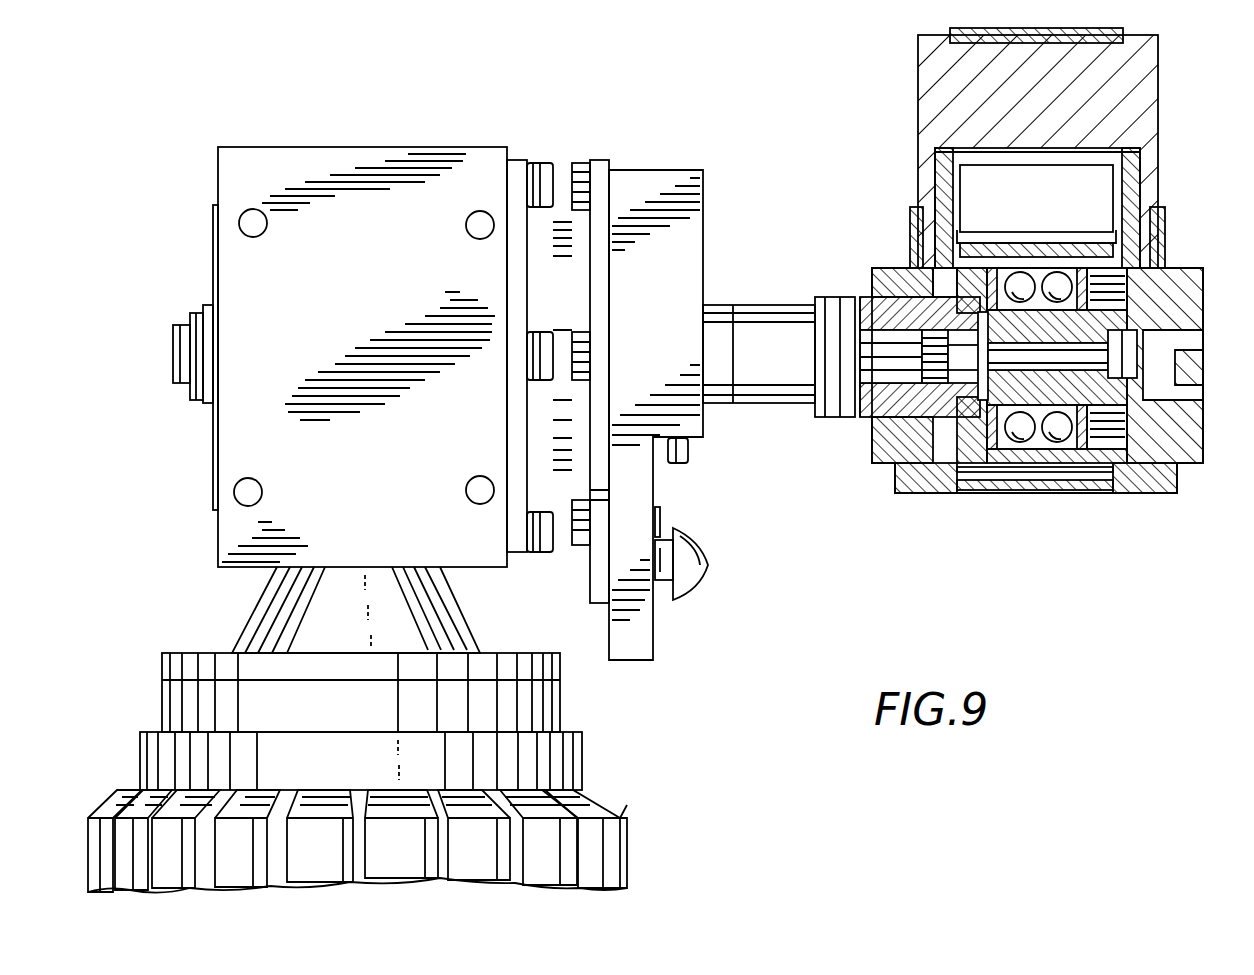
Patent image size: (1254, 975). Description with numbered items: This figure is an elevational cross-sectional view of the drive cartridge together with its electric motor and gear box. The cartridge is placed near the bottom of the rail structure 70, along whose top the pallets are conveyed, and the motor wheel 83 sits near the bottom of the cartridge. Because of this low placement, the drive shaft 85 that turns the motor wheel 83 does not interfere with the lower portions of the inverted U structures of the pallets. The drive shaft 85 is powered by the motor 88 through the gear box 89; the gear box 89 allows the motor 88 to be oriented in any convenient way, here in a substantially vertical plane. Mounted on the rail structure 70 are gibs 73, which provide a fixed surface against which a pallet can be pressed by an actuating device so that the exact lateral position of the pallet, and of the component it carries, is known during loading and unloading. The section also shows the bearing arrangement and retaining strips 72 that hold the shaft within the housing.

The rail structure 70 is at (1162, 104).
The bearing retainer strip 72 is at (1118, 28).
The gibs 73 is at (908, 240).
The motor wheel 83 is at (990, 494).
The drive shaft 85 is at (778, 403).
The motor 88 is at (628, 868).
The gear box 89 is at (392, 301).